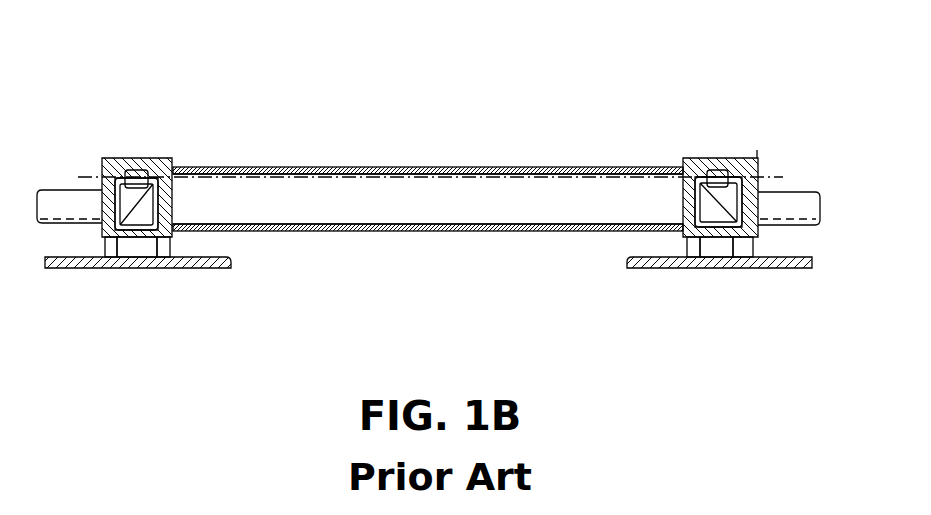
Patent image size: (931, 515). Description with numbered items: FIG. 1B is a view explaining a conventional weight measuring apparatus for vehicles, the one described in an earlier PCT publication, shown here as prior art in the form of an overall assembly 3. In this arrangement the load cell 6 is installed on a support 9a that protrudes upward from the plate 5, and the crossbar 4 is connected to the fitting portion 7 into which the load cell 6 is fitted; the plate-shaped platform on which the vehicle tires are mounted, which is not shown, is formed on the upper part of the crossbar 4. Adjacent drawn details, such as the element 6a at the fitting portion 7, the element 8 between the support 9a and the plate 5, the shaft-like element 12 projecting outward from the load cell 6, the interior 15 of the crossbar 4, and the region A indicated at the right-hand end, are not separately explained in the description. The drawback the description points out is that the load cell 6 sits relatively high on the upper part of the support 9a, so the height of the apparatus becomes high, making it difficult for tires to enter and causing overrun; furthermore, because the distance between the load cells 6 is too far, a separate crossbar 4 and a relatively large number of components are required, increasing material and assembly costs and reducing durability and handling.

The roller assembly 3 is at (436, 185).
The crossbar 4 is at (430, 214).
The plate 5 is at (232, 262).
The load cell 6 is at (170, 185).
The seal 6a is at (133, 185).
The fitting portion 7 is at (122, 172).
The pedestal 8 is at (128, 243).
The support 9a is at (107, 243).
The shaft 12 is at (77, 205).
The roller interior 15 is at (368, 205).
The region A is at (770, 170).